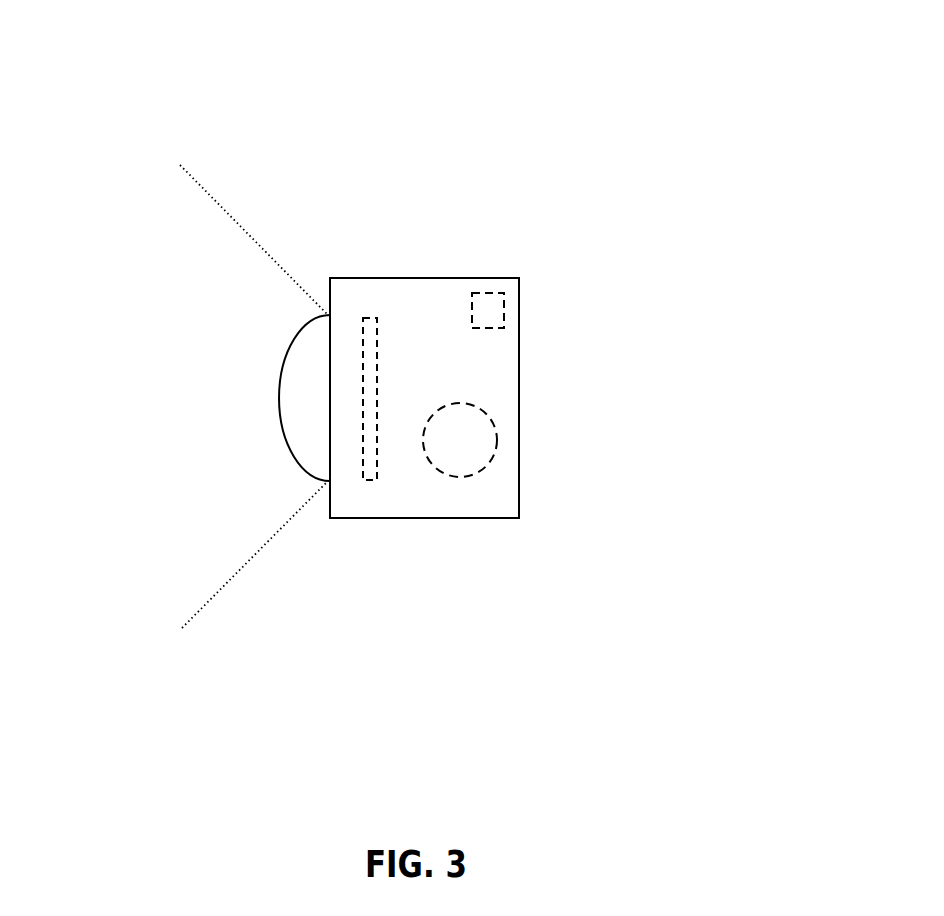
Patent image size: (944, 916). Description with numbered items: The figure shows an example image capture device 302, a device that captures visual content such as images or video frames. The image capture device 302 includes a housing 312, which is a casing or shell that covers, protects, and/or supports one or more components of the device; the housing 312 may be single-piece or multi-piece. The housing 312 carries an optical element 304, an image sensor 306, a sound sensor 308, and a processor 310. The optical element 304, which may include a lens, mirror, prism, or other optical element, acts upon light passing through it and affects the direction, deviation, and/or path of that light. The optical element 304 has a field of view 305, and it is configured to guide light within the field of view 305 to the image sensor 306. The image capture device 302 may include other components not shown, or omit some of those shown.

The image capture device 302 is at (487, 136).
The optical element 304 is at (303, 467).
The field of view 305 is at (258, 265).
The image sensor 306 is at (423, 228).
The sound sensor 308 is at (502, 312).
The processor 310 is at (482, 470).
The housing 312 is at (347, 518).